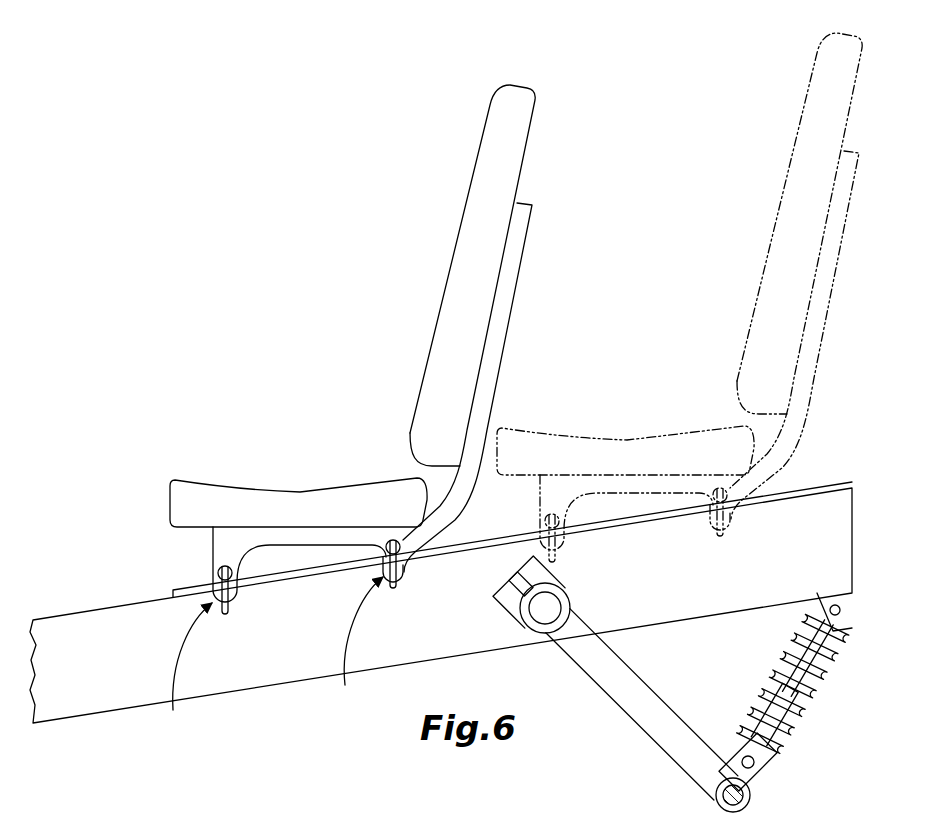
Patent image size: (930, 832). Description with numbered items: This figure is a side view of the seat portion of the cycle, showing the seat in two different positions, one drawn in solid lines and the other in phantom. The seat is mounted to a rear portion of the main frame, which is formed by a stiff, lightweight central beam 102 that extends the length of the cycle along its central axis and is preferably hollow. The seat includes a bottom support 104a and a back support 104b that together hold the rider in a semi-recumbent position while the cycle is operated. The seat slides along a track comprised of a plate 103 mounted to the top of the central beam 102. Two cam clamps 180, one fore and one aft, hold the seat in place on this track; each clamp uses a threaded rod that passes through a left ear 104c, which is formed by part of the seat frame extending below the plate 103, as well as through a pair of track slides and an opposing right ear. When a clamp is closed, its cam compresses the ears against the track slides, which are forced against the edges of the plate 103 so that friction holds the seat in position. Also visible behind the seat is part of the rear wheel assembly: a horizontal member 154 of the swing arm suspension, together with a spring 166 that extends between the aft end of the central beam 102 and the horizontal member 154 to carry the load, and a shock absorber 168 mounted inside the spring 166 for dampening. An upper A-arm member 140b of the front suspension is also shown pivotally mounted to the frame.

The central beam 102 is at (63, 703).
The plate 103 is at (180, 593).
The bottom support 104a is at (297, 490).
The back support 104b is at (453, 273).
The left ear 104c is at (238, 600).
The upper A-arm member 140b is at (660, 743).
The horizontal member 154 is at (753, 805).
The spring 166 is at (823, 677).
The shock absorber 168 is at (795, 725).
The cam clamp 180 is at (270, 659).